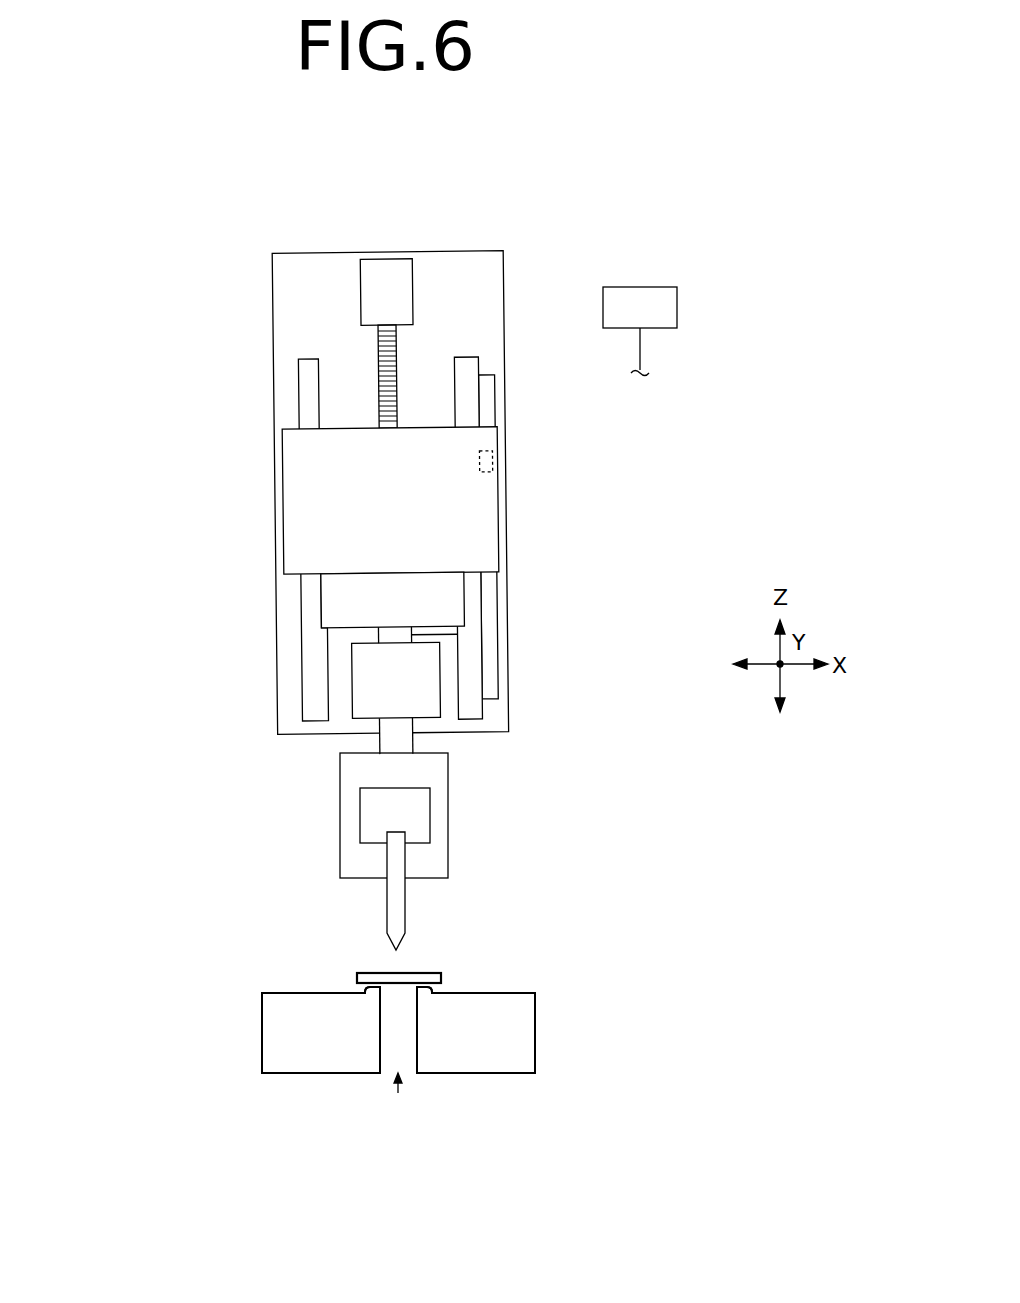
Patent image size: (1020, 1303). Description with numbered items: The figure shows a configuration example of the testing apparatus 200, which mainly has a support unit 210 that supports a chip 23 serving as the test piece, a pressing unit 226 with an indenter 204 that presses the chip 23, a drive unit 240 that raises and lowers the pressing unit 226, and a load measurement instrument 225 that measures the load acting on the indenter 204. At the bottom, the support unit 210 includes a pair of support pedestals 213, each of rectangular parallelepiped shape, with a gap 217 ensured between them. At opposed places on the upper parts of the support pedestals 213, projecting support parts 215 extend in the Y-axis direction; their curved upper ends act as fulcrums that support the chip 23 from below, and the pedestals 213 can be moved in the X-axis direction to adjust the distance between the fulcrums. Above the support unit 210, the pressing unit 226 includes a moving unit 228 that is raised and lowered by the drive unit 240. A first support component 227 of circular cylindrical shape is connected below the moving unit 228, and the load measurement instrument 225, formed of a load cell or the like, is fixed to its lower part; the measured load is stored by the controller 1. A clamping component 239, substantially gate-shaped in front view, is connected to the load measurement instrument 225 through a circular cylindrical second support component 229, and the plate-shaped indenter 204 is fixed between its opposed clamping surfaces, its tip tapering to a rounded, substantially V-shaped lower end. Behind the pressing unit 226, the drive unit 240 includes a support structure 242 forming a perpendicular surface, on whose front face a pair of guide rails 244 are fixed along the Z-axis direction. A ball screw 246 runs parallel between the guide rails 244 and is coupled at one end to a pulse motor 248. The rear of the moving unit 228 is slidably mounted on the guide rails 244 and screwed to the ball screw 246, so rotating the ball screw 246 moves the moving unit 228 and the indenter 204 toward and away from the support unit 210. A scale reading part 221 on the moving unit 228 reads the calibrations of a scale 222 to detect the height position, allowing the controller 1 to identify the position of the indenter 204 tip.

The controller 1 is at (640, 331).
The testing apparatus 200 is at (143, 326).
The drive unit 240 is at (464, 290).
The support structure 242 is at (448, 262).
The pulse motor 248 is at (362, 282).
The ball screw 246 is at (378, 367).
The guide rails 244 is at (298, 362).
The scale 222 is at (487, 410).
The scale reading part 221 is at (500, 462).
The pressing unit 226 is at (232, 447).
The moving unit 228 is at (303, 500).
The first support component 227 is at (458, 635).
The load measurement instrument 225 is at (439, 677).
The second support component 229 is at (411, 745).
The clamping component 239 is at (449, 815).
The indenter 204 is at (406, 908).
The chip 23 is at (365, 972).
The support unit 210 is at (530, 1107).
The support pedestals 213 is at (307, 1060).
The support parts 215 is at (364, 991).
The gap 217 is at (400, 1103).